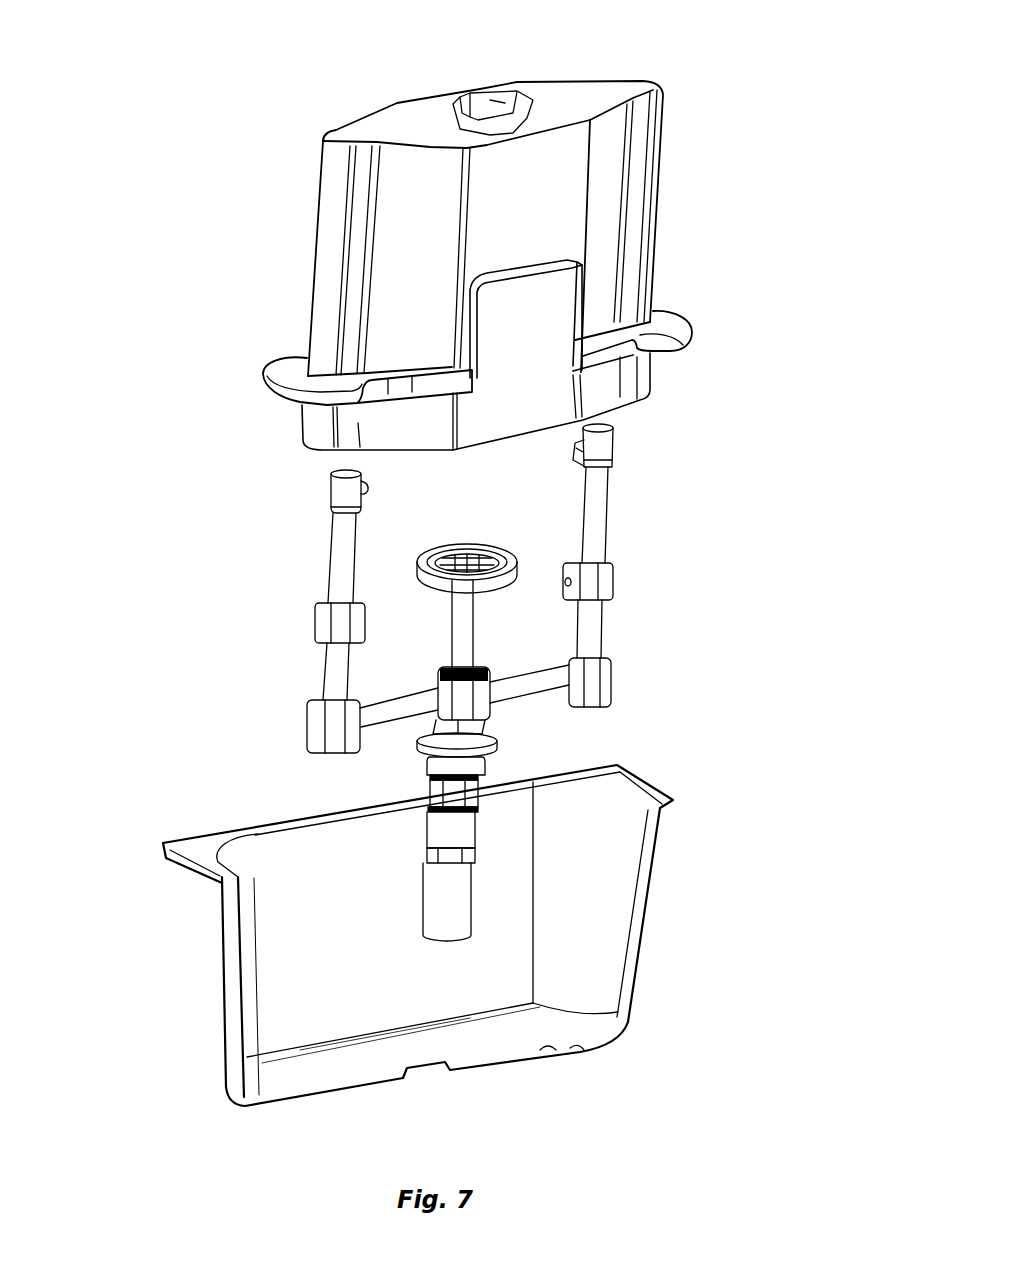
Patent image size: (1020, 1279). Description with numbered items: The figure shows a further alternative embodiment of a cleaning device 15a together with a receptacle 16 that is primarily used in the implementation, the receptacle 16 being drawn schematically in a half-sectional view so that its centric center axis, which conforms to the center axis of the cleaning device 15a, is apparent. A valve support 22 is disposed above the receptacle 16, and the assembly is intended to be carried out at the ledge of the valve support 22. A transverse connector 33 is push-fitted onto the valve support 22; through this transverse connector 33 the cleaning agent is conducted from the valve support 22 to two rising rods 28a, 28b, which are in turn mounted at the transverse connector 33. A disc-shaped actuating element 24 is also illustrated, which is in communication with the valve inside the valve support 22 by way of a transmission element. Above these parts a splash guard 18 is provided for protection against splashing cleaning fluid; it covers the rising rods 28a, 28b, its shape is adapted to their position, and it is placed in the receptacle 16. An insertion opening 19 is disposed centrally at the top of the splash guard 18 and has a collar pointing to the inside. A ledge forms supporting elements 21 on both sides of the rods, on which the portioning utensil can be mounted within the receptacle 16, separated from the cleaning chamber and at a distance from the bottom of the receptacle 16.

The cleaning device 15a is at (182, 90).
The receptacle 16 is at (293, 973).
The splash guard 18 is at (425, 277).
The insertion opening 19 is at (478, 95).
The supporting elements 21 is at (293, 370).
The valve support 22 is at (432, 833).
The actuating element 24 is at (503, 551).
The rising rod 28a is at (586, 623).
The rising rod 28b is at (333, 560).
The transverse connector 33 is at (517, 687).